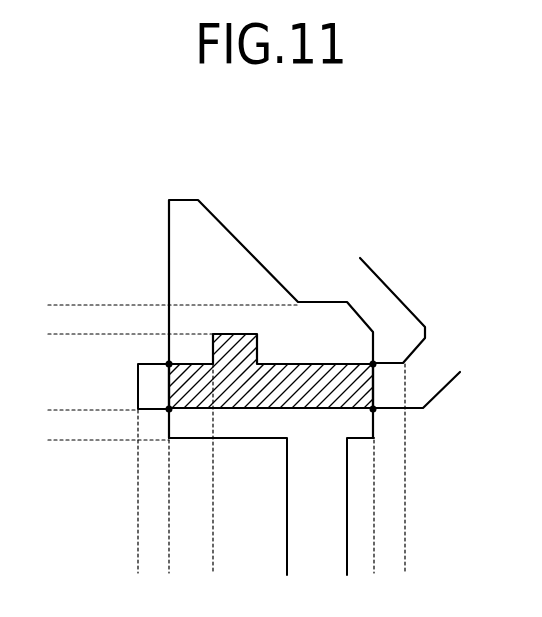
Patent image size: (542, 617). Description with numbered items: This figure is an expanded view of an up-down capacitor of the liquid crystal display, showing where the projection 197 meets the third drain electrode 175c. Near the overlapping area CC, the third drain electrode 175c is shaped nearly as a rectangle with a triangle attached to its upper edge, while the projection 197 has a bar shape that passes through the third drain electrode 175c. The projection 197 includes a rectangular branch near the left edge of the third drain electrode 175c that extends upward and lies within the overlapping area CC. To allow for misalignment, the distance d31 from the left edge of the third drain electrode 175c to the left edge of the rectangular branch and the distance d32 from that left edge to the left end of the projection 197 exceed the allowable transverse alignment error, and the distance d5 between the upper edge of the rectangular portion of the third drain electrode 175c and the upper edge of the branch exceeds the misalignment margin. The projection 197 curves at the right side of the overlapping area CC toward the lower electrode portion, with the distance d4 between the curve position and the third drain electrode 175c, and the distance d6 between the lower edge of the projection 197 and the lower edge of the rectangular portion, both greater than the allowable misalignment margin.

The third drain electrode 175c is at (222, 222).
The overlapping area CC is at (297, 372).
The projection 197 is at (393, 410).
The distance d5 is at (60, 305).
The distance d6 is at (60, 410).
The distance d32 is at (169, 563).
The distance d31 is at (213, 563).
The distance d4 is at (405, 563).